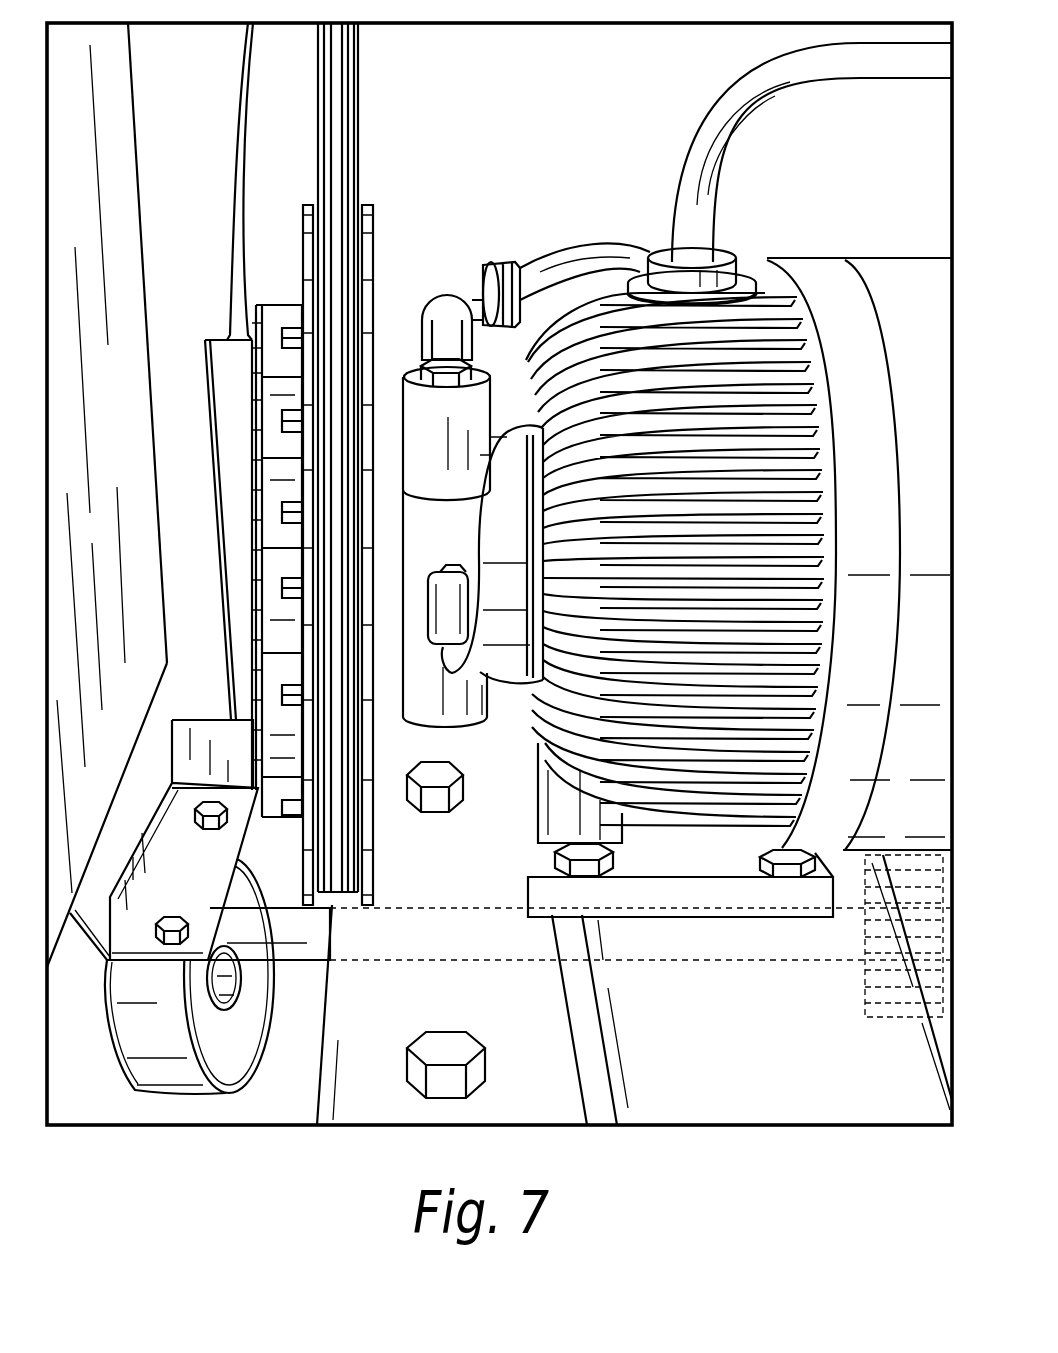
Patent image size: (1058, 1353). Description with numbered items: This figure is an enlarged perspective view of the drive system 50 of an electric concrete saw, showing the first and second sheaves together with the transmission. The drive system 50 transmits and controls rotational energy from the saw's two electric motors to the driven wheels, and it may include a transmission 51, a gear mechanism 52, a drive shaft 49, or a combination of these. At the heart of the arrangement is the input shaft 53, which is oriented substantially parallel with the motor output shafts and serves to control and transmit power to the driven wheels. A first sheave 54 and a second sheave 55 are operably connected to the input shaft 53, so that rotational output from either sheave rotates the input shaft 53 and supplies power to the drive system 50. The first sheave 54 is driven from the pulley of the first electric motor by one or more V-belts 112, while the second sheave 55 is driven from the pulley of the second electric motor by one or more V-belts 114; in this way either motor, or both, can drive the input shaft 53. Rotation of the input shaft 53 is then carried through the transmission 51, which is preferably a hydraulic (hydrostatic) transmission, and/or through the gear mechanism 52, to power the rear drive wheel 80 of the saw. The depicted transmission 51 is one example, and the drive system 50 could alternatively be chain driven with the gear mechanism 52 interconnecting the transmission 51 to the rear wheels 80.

The drive shaft 49 is at (270, 933).
The drive system 50 is at (502, 156).
The transmission 51 is at (737, 353).
The gear mechanism 52 is at (887, 967).
The input shaft 53 is at (383, 548).
The first sheave 54 is at (257, 485).
The second sheave 55 is at (373, 265).
The drive wheel 80 is at (237, 1030).
The V-belts 112 is at (287, 392).
The V-belts 114 is at (342, 103).